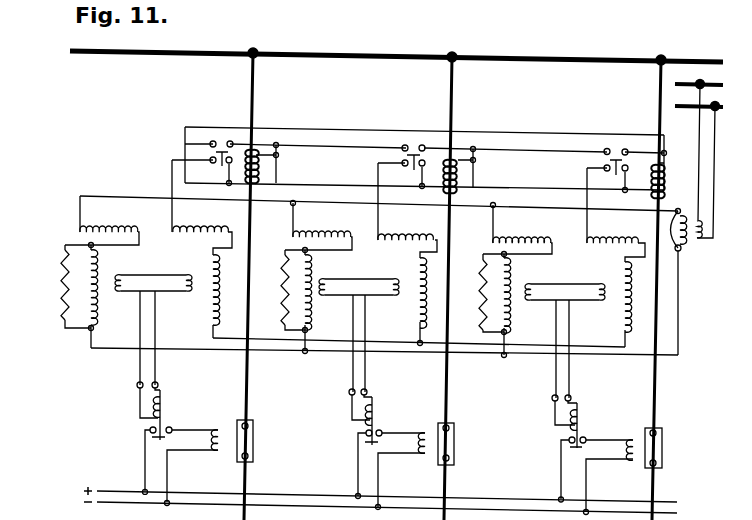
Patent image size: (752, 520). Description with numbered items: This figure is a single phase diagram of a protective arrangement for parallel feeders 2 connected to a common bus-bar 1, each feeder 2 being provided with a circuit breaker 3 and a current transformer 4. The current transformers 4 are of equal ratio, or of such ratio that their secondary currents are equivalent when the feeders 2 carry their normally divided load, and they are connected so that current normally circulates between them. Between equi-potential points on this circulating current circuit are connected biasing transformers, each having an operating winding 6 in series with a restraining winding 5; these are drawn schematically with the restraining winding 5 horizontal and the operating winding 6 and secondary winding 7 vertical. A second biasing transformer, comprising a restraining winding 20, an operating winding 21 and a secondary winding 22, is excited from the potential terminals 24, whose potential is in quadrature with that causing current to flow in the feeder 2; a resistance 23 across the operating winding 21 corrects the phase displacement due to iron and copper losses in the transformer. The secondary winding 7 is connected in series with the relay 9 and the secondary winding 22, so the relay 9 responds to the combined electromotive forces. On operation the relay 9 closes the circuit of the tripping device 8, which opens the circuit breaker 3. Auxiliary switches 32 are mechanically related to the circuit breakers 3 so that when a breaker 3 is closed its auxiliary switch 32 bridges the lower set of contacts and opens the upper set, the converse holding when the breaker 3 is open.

The bus-bar 1 is at (370, 52).
The feeder 2 is at (658, 98).
The circuit breaker 3 is at (678, 455).
The current transformer 4 is at (460, 171).
The restraining winding 5 is at (409, 238).
The operating winding 6 is at (628, 318).
The secondary winding 7 is at (593, 288).
The tripping device 8 is at (632, 438).
The relay 9 is at (584, 414).
The restraining winding 20 is at (316, 225).
The operating winding 21 is at (507, 318).
The secondary winding 22 is at (542, 291).
The resistance 23 is at (482, 305).
The potential terminals 24 is at (682, 242).
The auxiliary switch 32 is at (419, 185).